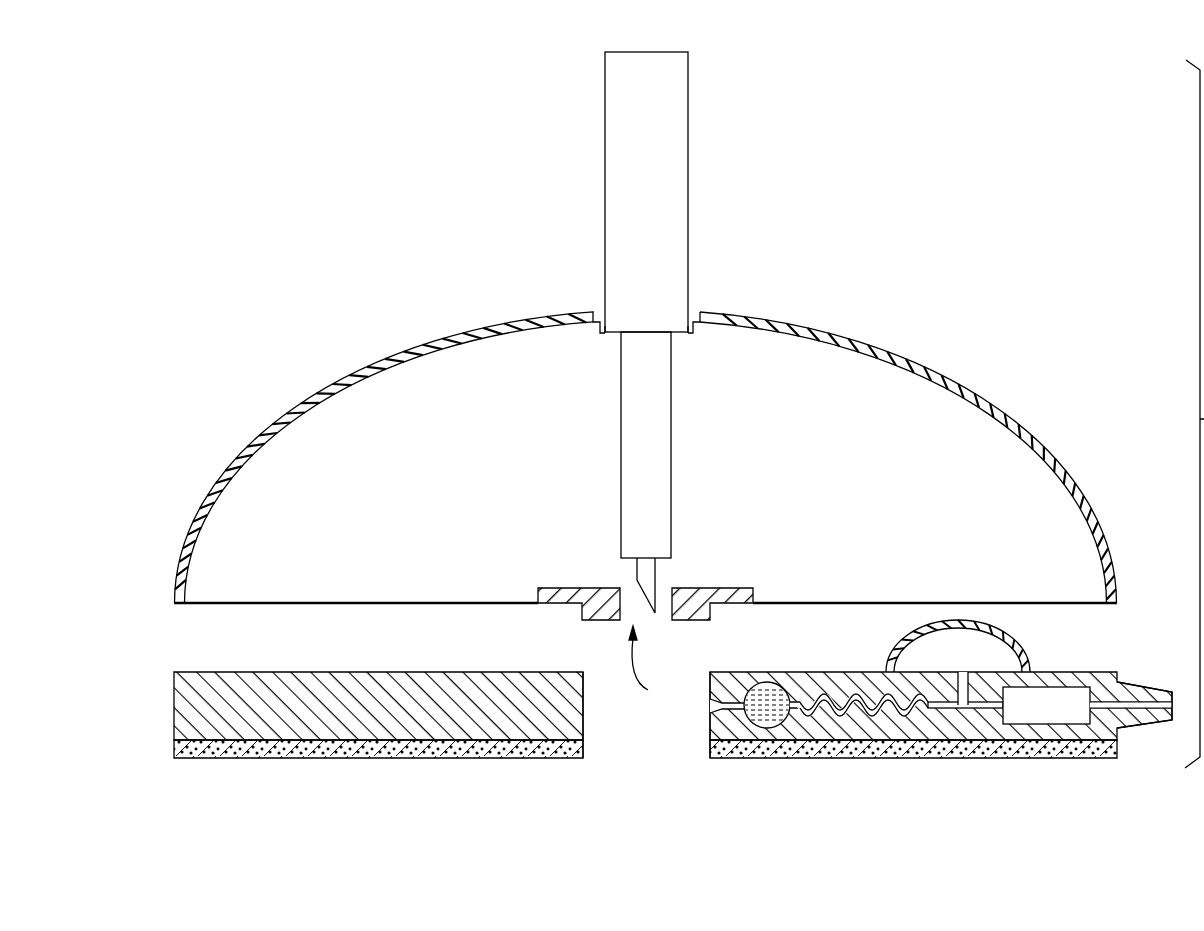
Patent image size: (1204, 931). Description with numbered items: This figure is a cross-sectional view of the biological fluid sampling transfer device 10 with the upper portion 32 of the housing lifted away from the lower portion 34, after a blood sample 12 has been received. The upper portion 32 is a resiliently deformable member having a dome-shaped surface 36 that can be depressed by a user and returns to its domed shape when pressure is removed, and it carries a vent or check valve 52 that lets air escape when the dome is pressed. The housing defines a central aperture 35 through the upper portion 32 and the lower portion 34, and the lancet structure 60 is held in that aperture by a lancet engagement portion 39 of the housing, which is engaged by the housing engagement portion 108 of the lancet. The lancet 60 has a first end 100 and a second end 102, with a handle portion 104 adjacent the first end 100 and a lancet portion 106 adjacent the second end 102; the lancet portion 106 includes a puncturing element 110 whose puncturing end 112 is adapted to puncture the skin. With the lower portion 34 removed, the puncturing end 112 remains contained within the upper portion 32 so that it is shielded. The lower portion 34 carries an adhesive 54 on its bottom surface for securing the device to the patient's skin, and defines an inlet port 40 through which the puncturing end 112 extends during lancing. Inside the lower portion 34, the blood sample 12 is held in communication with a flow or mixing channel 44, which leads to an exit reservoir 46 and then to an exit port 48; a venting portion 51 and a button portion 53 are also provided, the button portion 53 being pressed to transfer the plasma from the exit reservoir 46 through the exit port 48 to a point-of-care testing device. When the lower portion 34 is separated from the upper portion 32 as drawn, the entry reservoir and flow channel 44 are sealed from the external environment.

The biological fluid sampling transfer device 10 is at (904, 158).
The blood sample 12 is at (768, 683).
The upper portion 32 is at (340, 392).
The lower portion 34 is at (174, 697).
The central aperture 35 is at (598, 724).
The dome-shaped surface 36 is at (436, 340).
The lancet engagement portion 39 is at (578, 586).
The inlet port 40 is at (655, 715).
The flow channel 44 is at (822, 700).
The exit reservoir 46 is at (1063, 708).
The exit port 48 is at (1148, 685).
The venting portion 51 is at (963, 672).
The check valve 52 is at (645, 454).
The button portion 53 is at (1016, 645).
The adhesive 54 is at (174, 752).
The lancet structure 60 is at (653, 316).
The first end 100 is at (687, 316).
The second end 102 is at (658, 674).
The handle portion 104 is at (690, 206).
The lancet portion 106 is at (672, 472).
The housing engagement portion 108 is at (614, 326).
The puncturing element 110 is at (638, 658).
The puncturing end 112 is at (660, 590).